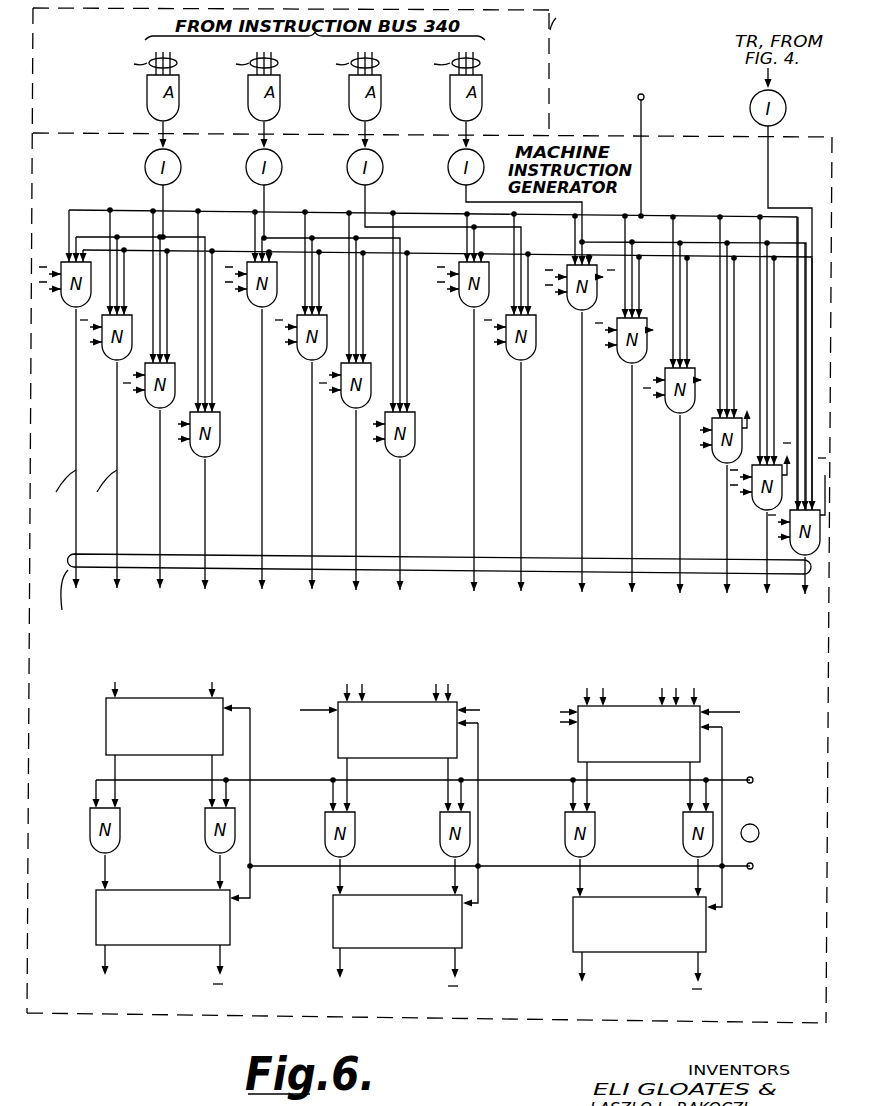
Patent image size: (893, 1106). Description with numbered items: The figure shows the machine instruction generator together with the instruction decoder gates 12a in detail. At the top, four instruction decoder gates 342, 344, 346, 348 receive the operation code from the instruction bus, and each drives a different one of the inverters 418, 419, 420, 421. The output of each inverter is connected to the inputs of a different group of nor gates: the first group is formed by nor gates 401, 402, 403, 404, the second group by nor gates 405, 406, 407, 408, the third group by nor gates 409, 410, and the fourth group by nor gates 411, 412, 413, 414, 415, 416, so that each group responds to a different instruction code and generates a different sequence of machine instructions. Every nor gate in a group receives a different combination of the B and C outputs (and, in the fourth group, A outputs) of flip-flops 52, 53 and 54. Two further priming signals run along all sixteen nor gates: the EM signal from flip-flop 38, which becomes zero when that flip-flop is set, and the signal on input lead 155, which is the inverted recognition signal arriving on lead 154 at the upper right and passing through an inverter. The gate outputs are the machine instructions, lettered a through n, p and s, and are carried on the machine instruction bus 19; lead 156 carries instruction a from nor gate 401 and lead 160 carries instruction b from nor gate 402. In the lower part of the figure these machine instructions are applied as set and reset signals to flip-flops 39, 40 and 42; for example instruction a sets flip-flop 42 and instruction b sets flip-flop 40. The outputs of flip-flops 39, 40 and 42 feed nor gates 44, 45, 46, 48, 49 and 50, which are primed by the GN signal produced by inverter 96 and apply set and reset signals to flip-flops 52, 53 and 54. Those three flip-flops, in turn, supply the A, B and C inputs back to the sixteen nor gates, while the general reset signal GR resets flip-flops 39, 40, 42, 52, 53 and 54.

The instruction decoder gates 12a is at (666, 20).
The instruction decoder gate 342 is at (147, 92).
The instruction decoder gate 344 is at (248, 92).
The instruction decoder gate 346 is at (349, 92).
The instruction decoder gate 348 is at (450, 92).
The inverter 418 is at (143, 172).
The inverter 419 is at (244, 172).
The inverter 420 is at (345, 172).
The inverter 421 is at (446, 172).
The flip-flop 38 is at (646, 127).
The lead 154 is at (770, 75).
The input lead 155 is at (768, 160).
The nor gate 401 is at (64, 312).
The nor gate 402 is at (105, 365).
The nor gate 403 is at (148, 413).
The nor gate 404 is at (193, 462).
The nor gate 405 is at (250, 312).
The nor gate 406 is at (300, 365).
The nor gate 407 is at (344, 413).
The nor gate 408 is at (388, 462).
The nor gate 409 is at (462, 312).
The nor gate 410 is at (509, 365).
The nor gate 411 is at (570, 315).
The nor gate 412 is at (620, 368).
The nor gate 413 is at (668, 418).
The nor gate 414 is at (715, 468).
The nor gate 415 is at (755, 515).
The nor gate 416 is at (785, 540).
The machine instruction bus 19 is at (433, 598).
The lead 156 is at (57, 487).
The lead 160 is at (100, 487).
The flip-flop 39 is at (176, 680).
The flip-flop 40 is at (413, 684).
The flip-flop 42 is at (648, 688).
The nor gate 44 is at (88, 837).
The nor gate 45 is at (203, 832).
The nor gate 46 is at (323, 832).
The nor gate 48 is at (438, 840).
The nor gate 49 is at (563, 840).
The nor gate 50 is at (681, 840).
The flip-flop 52 is at (166, 948).
The flip-flop 53 is at (412, 950).
The flip-flop 54 is at (655, 955).
The inverter 96 is at (775, 826).